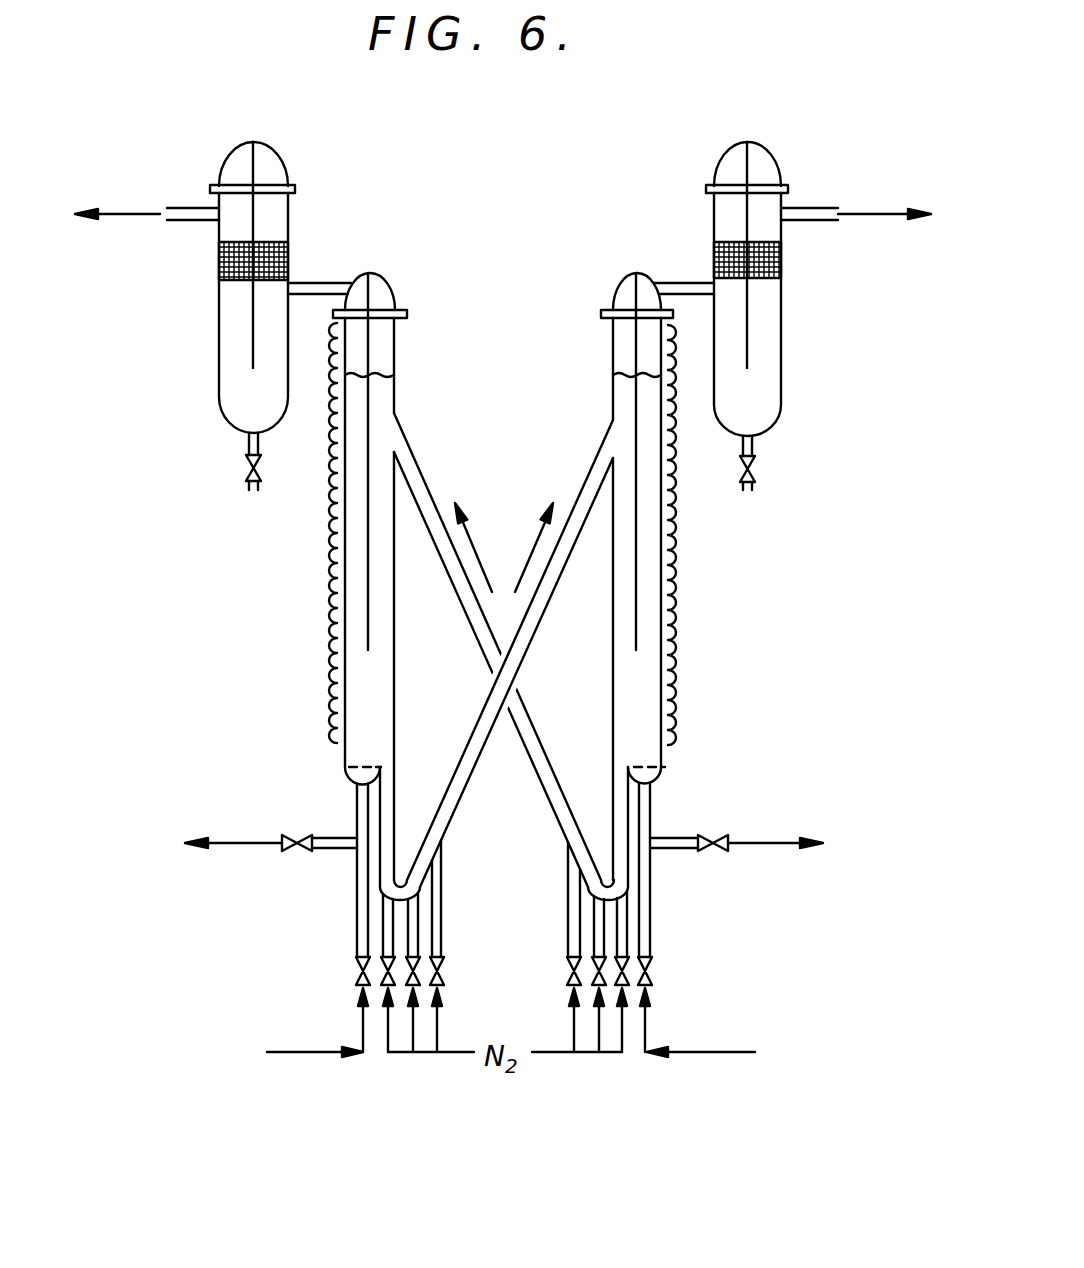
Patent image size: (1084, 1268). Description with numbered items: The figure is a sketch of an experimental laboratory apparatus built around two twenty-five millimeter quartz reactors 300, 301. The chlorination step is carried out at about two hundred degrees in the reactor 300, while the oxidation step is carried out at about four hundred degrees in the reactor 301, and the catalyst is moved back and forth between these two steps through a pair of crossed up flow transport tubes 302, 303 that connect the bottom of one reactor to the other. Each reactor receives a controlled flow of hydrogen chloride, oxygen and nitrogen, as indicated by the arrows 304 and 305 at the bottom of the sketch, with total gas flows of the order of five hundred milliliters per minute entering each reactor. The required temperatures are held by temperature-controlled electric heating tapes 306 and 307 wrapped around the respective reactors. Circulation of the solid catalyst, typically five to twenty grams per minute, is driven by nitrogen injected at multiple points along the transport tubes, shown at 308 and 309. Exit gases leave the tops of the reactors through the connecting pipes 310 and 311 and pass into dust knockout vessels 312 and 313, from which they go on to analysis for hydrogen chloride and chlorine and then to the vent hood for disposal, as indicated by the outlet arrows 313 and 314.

The quartz reactor 300 is at (358, 570).
The quartz reactor 301 is at (647, 558).
The up flow transport tube 302 is at (453, 818).
The up flow transport tube 303 is at (520, 735).
The gas feed arrow 304 is at (283, 1052).
The gas feed arrow 305 is at (718, 1052).
The electric heating tape 306 is at (327, 655).
The electric heating tape 307 is at (682, 673).
The nitrogen injection 308 is at (455, 1066).
The nitrogen injection 309 is at (548, 1068).
The outlet pipe 310 is at (315, 283).
The outlet pipe 311 is at (678, 287).
The dust knockout vessel 312 is at (228, 332).
The dust knockout vessel 313 is at (760, 342).
The vent arrow 314 is at (875, 213).